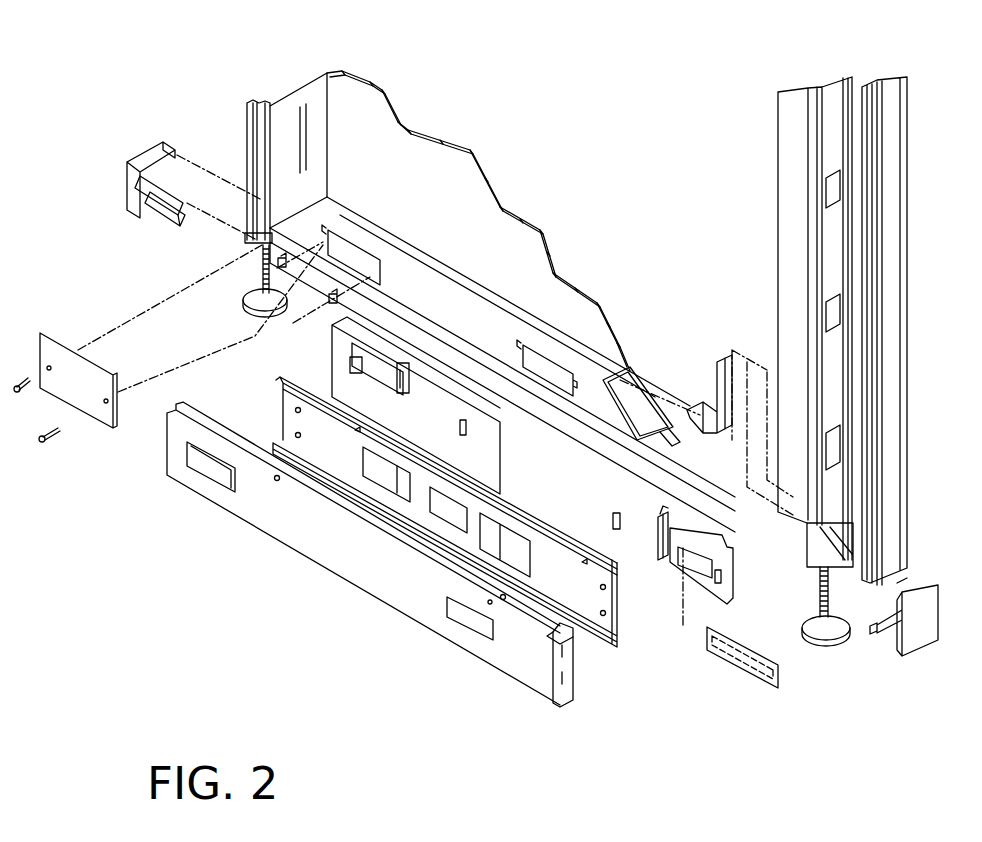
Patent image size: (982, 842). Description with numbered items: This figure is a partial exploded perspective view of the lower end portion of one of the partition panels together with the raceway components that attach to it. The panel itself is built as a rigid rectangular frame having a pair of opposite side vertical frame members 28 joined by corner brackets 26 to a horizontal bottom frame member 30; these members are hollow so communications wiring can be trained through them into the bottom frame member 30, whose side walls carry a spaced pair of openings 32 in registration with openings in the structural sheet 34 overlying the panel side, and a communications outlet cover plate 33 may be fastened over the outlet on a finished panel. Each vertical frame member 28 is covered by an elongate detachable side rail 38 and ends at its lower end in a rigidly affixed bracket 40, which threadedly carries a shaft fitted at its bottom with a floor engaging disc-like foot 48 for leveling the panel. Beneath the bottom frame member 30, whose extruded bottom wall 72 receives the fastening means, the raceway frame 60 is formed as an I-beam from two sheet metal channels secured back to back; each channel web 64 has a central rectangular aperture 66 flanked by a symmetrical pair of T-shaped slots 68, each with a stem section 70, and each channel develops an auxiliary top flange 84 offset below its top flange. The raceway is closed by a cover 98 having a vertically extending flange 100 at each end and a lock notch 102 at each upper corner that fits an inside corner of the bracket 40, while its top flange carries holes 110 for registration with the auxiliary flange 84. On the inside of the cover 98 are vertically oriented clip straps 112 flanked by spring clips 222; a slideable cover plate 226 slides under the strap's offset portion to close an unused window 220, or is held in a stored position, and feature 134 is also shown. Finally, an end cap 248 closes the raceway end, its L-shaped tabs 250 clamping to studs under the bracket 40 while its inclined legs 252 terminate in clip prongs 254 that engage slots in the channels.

The corner bracket 26 is at (717, 400).
The side vertical frame member 28 is at (290, 105).
The horizontal bottom frame member 30 is at (437, 253).
The opening 32 is at (527, 360).
The communications outlet cover plate 33 is at (47, 337).
The structural sheet 34 is at (355, 75).
The side rail 38 is at (887, 83).
The bracket 40 is at (257, 237).
The floor engaging disc-like foot 48 is at (243, 303).
The raceway frame 60 is at (454, 503).
The web 64 is at (445, 528).
The rectangular aperture 66 is at (450, 525).
The T-shaped slot 68 is at (366, 476).
The stem section 70 is at (407, 500).
The bottom wall 72 is at (663, 443).
The auxiliary top flange 84 is at (287, 382).
The cover 98 is at (402, 561).
The vertically extending flange 100 is at (577, 683).
The lock notch 102 is at (575, 640).
The hole 110 is at (650, 495).
The clip strap 112 is at (667, 523).
The opening 134 is at (277, 480).
The window 220 is at (455, 615).
The spring clip 222 is at (717, 600).
The slideable cover plate 226 is at (370, 357).
The end cap 248 is at (912, 657).
The L-shaped tab 250 is at (175, 155).
The leg 252 is at (147, 216).
The clip prong 254 is at (168, 230).